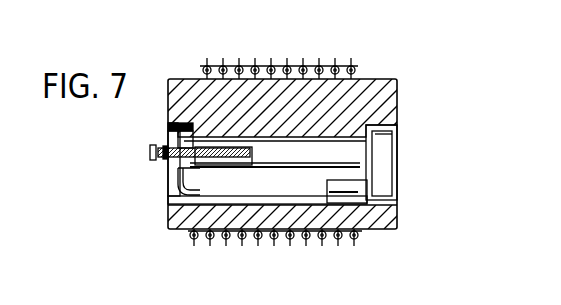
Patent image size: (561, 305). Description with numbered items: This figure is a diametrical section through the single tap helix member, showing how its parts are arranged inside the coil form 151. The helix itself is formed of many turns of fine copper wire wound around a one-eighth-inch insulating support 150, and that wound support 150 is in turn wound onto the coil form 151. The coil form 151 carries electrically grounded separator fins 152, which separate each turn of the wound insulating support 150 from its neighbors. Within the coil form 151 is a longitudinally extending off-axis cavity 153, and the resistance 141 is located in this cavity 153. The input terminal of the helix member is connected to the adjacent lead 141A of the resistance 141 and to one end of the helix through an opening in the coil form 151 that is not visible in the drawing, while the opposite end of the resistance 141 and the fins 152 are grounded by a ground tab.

The resistance 141 is at (305, 196).
The lead of the resistance 141A is at (177, 183).
The insulating support 150 is at (241, 66).
The coil form 151 is at (183, 79).
The separator fins 152 is at (315, 62).
The off-axis cavity 153 is at (170, 204).